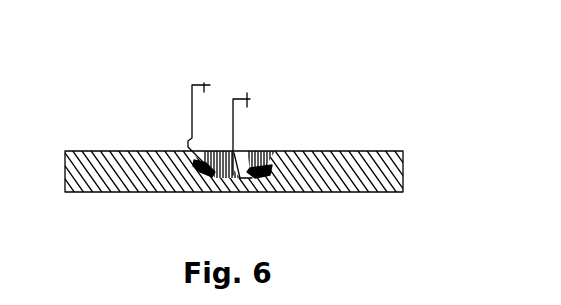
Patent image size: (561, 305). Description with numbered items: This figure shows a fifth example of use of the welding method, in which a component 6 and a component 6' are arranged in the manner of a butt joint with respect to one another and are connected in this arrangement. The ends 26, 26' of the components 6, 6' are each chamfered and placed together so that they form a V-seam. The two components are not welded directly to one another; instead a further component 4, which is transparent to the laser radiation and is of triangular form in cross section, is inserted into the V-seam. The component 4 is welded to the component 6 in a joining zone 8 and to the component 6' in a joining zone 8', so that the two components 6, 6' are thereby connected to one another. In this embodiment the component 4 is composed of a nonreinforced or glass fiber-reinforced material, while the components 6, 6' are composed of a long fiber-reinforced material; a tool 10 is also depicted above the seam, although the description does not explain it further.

The tool 10 is at (193, 97).
The joining zone 8 is at (167, 137).
The joining zone 8' is at (319, 138).
The component 4 is at (267, 152).
The end 26 is at (195, 199).
The end 26' is at (287, 194).
The component 6 is at (230, 200).
The component 6' is at (239, 193).